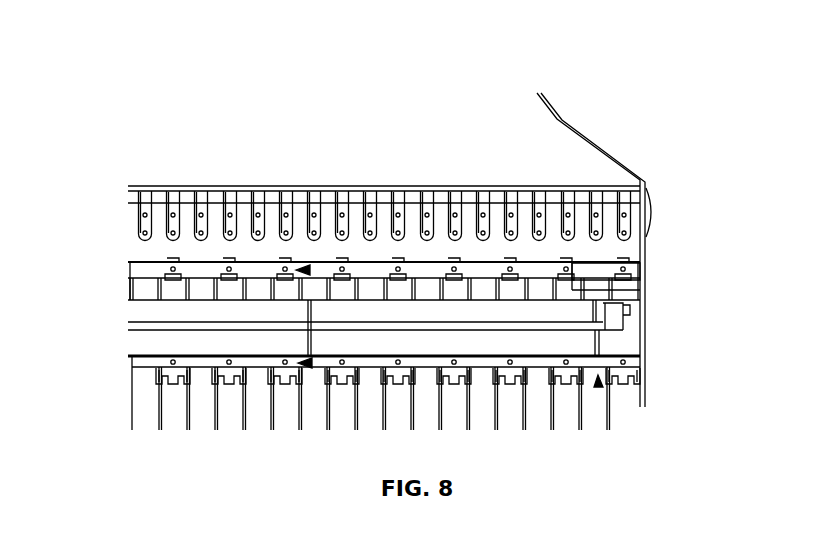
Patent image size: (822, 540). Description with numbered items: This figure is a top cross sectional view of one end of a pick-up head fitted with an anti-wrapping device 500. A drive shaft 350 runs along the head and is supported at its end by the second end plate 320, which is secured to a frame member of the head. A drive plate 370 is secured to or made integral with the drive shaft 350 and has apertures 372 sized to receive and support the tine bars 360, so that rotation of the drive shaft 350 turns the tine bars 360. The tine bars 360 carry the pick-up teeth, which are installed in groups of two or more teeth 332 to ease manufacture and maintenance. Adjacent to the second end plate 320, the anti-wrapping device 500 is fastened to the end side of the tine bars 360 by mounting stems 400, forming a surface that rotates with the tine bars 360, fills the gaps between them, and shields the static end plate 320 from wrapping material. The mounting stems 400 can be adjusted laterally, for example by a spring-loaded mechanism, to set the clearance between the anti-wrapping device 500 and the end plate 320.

The second end plate 320 is at (644, 218).
The anti-wrapping device 500 is at (641, 256).
The tine bars 360 is at (135, 270).
The drive shaft 350 is at (136, 315).
The teeth 332 is at (188, 432).
The drive plate 370 is at (595, 295).
The apertures 372 is at (305, 270).
The mounting stems 400 is at (643, 360).